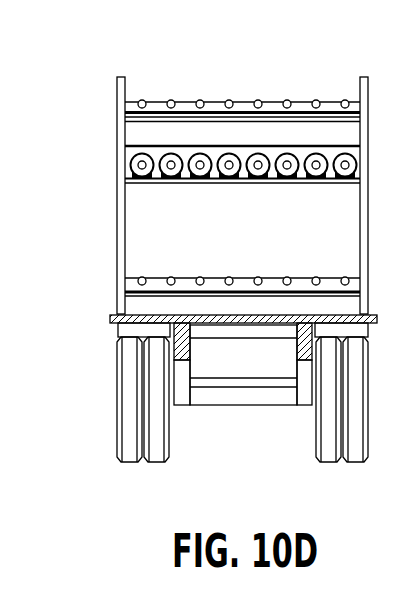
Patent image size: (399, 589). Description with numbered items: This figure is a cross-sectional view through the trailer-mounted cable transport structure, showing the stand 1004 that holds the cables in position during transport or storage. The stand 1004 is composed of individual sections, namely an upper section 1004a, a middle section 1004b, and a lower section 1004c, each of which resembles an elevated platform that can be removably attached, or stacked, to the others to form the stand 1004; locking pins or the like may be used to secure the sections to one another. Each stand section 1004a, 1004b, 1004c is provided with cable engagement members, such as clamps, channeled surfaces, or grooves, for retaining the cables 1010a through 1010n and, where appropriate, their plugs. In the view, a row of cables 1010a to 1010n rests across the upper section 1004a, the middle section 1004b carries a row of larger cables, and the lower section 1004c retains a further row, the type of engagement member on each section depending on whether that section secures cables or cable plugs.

The stand 1004 is at (117, 115).
The upper section 1004a is at (242, 67).
The middle section 1004b is at (161, 183).
The lower section 1004c is at (300, 278).
The cable 1010a is at (142, 99).
The cable 1010n is at (345, 100).